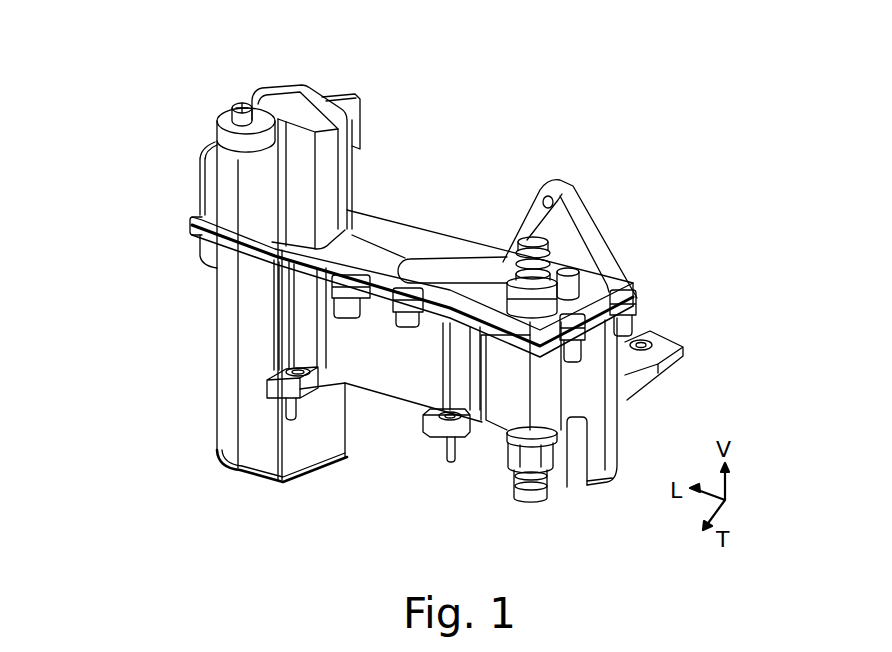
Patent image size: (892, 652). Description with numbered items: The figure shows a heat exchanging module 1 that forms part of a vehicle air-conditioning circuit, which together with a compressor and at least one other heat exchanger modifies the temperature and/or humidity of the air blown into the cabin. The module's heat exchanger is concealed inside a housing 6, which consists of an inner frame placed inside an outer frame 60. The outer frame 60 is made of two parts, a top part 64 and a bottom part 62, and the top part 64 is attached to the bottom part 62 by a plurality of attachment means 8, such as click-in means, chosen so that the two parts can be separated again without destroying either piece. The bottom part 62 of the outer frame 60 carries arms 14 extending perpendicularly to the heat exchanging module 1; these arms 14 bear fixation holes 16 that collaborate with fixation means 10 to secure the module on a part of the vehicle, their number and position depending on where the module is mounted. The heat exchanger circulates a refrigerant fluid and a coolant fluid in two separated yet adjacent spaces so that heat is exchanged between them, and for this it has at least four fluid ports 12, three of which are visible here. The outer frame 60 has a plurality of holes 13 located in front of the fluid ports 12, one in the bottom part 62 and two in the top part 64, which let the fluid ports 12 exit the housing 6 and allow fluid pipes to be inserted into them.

The heat exchanging module 1 is at (139, 245).
The housing 6 is at (361, 456).
The attachment means 8 is at (407, 268).
The fixation means 10 is at (447, 463).
The fluid ports 12 is at (243, 103).
The holes 13 is at (501, 281).
The arms 14 is at (410, 437).
The fixation holes 16 is at (462, 440).
The outer frame 60 is at (595, 401).
The bottom part 62 is at (233, 347).
The top part 64 is at (230, 160).